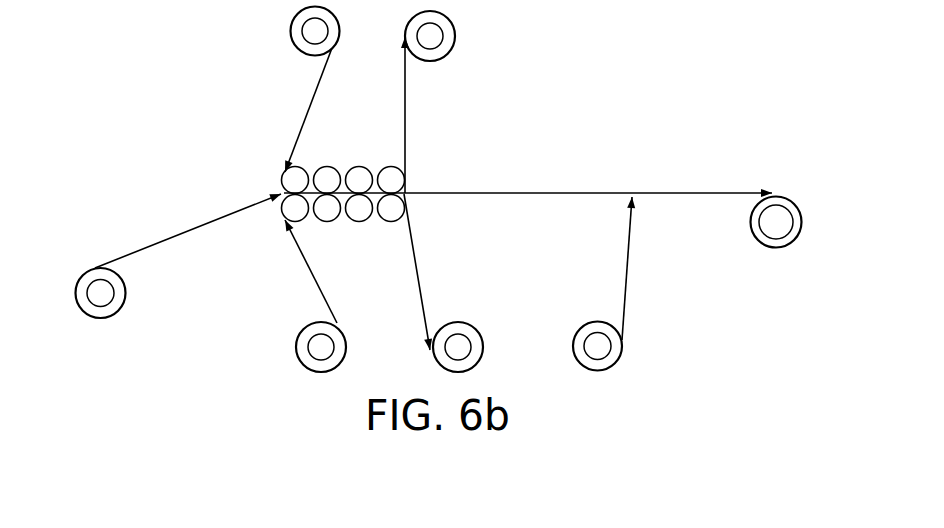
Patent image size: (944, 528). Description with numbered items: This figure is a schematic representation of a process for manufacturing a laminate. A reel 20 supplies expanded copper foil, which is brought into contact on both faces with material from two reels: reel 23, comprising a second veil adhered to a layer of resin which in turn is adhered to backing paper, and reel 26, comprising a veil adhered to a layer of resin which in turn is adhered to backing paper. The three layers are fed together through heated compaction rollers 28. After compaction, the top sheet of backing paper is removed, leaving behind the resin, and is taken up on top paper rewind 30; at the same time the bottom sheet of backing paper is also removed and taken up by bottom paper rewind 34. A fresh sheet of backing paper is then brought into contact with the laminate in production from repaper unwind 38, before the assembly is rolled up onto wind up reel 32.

The reel 20 is at (74, 288).
The reel 23 is at (290, 28).
The reel 26 is at (294, 341).
The heated compaction rollers 28 is at (393, 228).
The top paper rewind 30 is at (456, 34).
The wind up reel 32 is at (802, 217).
The bottom paper rewind 34 is at (484, 344).
The repaper unwind 38 is at (624, 342).